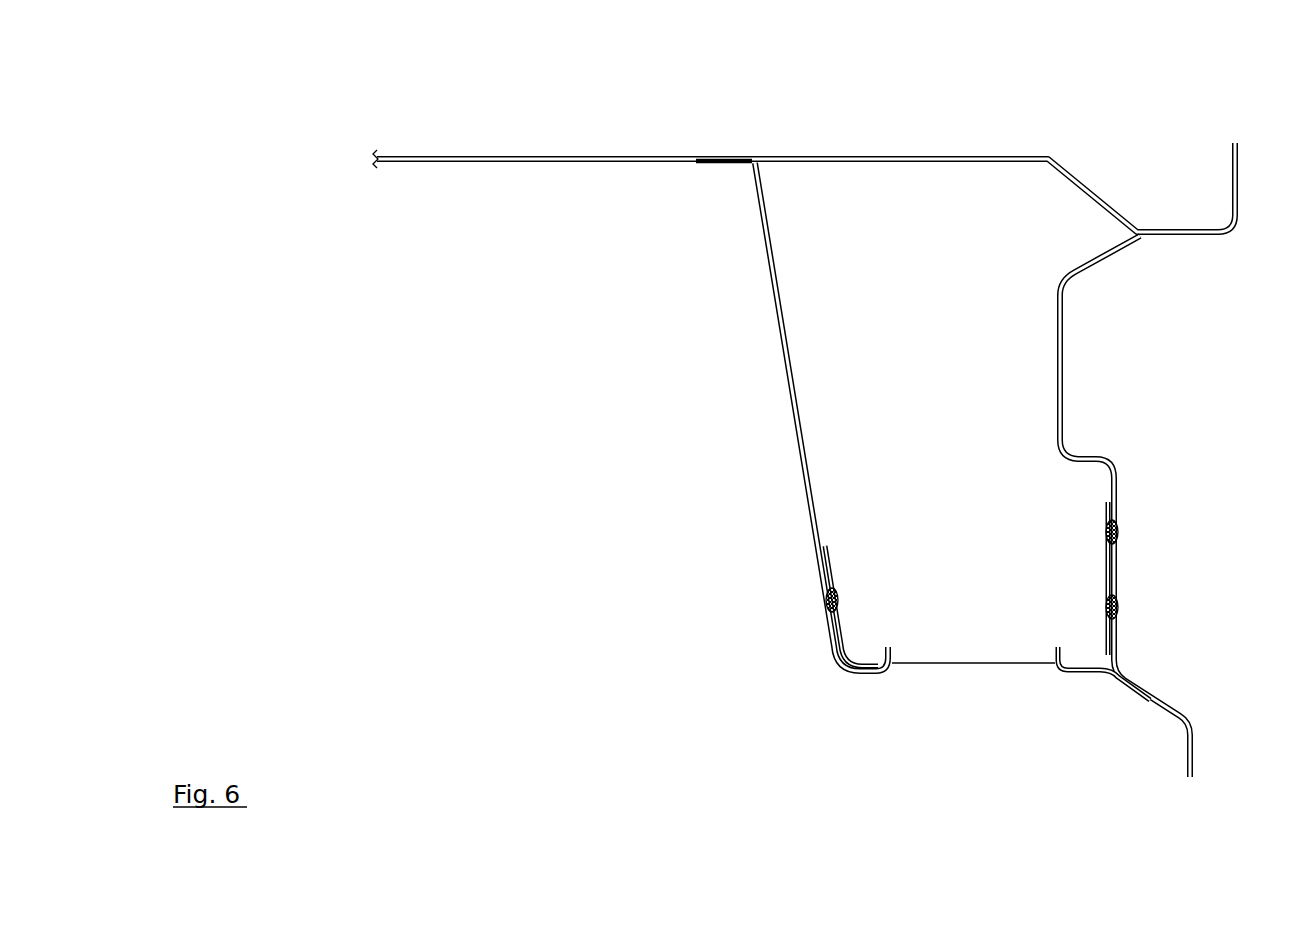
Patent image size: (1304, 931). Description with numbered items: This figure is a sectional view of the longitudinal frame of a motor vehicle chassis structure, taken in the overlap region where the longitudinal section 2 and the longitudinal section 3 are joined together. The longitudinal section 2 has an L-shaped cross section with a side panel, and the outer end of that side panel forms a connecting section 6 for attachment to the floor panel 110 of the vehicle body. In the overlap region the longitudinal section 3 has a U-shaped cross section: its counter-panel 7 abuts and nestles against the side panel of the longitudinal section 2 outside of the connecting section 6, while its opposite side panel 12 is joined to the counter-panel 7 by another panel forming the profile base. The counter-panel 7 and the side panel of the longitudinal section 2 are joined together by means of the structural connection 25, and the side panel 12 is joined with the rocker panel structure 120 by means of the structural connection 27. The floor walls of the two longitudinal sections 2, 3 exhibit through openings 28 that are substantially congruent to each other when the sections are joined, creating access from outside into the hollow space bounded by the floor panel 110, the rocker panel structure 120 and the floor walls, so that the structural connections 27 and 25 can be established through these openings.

The floor panel 110 is at (535, 157).
The rocker panel structure 120 is at (1060, 387).
The longitudinal section 2 is at (787, 343).
The longitudinal section 3 is at (1068, 632).
The connecting section 6 is at (722, 163).
The counter-panel 7 is at (832, 570).
The side panel 12 is at (1108, 565).
The structural connection 25 is at (824, 602).
The structural connection 27 is at (1118, 600).
The through openings 28 is at (967, 670).